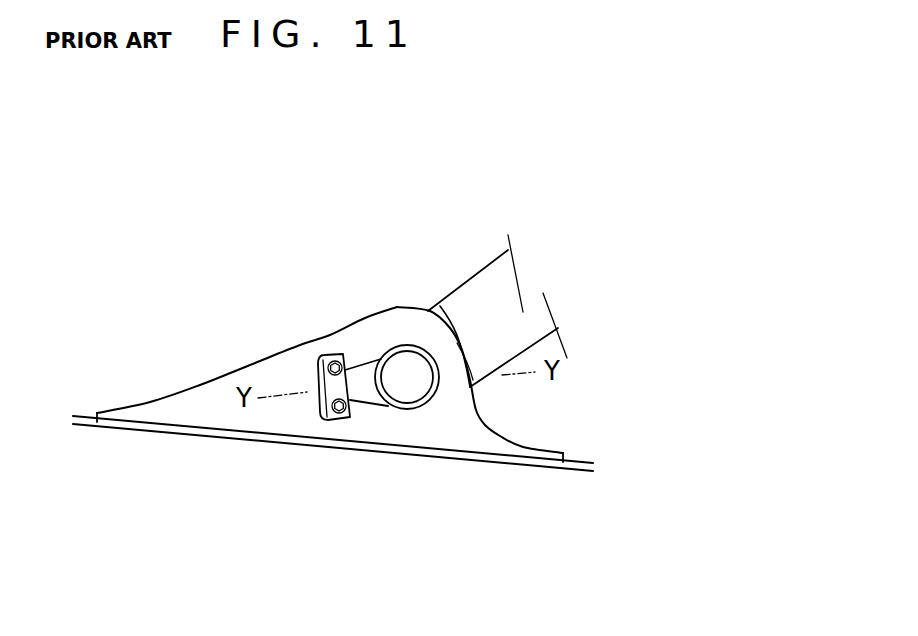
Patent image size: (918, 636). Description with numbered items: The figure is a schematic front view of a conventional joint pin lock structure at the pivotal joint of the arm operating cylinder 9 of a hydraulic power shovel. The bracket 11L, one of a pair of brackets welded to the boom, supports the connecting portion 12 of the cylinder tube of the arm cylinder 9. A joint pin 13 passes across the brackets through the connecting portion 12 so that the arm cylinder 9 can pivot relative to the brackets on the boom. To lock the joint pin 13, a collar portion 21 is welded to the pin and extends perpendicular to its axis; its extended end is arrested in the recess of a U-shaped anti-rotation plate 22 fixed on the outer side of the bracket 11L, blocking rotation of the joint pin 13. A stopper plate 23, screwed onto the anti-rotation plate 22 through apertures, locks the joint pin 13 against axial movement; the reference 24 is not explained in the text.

The arm operating cylinder 9 is at (543, 293).
The bracket 11L is at (220, 408).
The connecting portion 12 is at (483, 370).
The joint pin 13 is at (402, 363).
The collar portion 21 is at (372, 390).
The U-shaped anti-rotation plate 22 is at (318, 378).
The stopper plate 23 is at (337, 362).
The lower bolt 24 is at (338, 417).